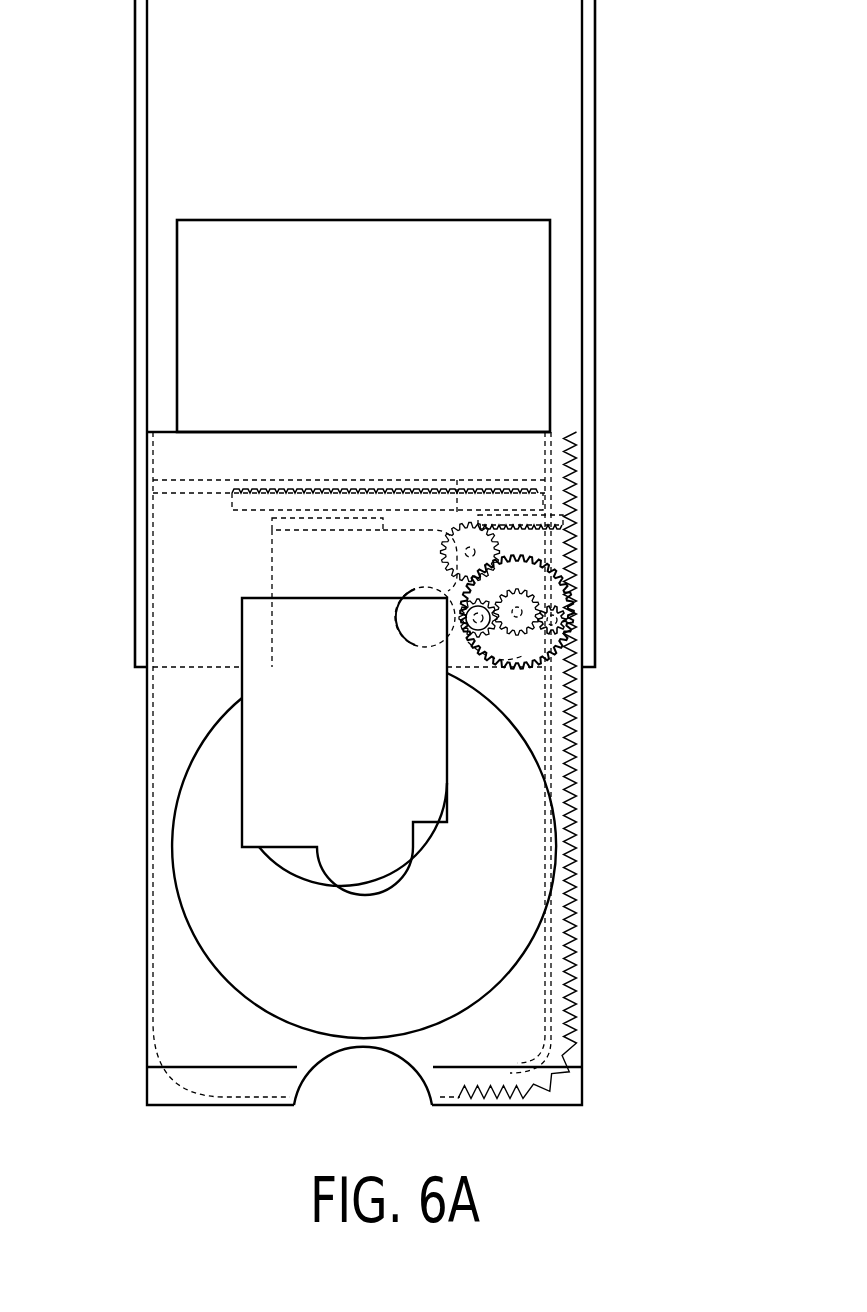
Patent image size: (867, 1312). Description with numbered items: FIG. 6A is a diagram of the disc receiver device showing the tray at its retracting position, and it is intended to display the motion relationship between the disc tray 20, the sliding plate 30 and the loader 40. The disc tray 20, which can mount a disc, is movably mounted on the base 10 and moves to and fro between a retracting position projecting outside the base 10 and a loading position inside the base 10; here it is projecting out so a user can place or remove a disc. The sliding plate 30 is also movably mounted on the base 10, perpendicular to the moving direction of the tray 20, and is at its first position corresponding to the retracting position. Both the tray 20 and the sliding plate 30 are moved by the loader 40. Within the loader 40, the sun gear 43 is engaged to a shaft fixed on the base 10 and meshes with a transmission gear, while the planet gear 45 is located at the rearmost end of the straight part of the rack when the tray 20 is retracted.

The base 10 is at (167, 133).
The disc tray 20 is at (180, 1000).
The sliding plate 30 is at (490, 500).
The loader 40 is at (605, 659).
The sun gear 43 is at (530, 600).
The planet gear 45 is at (566, 618).